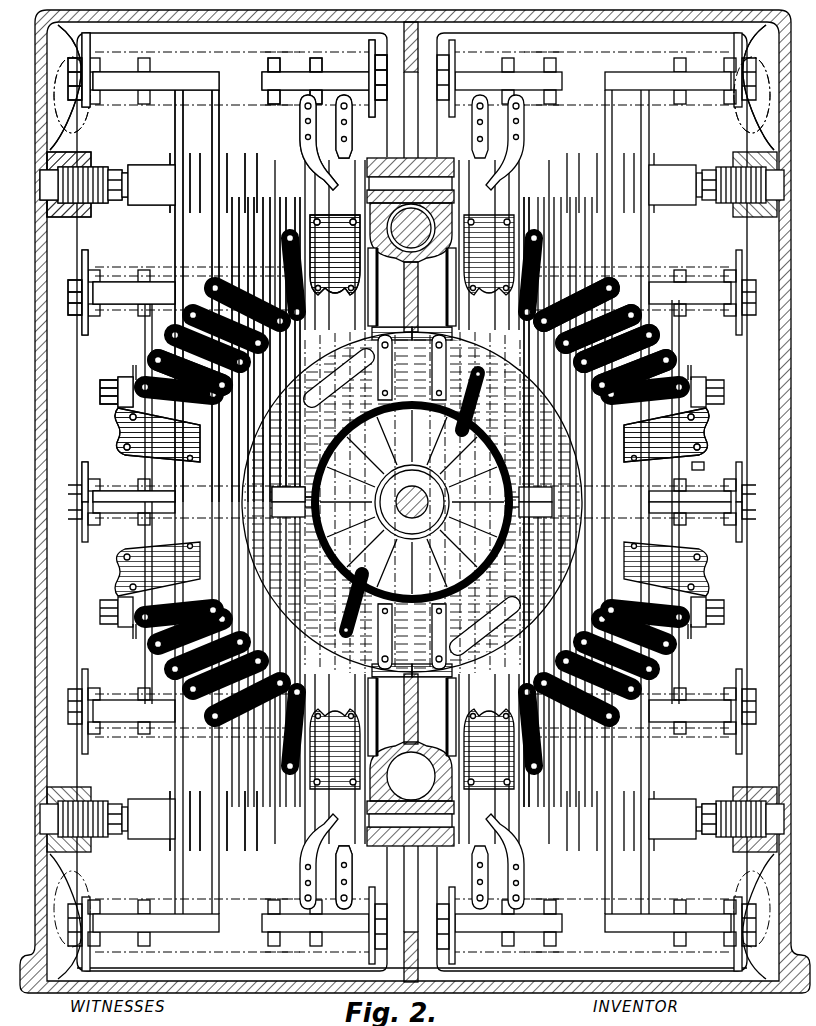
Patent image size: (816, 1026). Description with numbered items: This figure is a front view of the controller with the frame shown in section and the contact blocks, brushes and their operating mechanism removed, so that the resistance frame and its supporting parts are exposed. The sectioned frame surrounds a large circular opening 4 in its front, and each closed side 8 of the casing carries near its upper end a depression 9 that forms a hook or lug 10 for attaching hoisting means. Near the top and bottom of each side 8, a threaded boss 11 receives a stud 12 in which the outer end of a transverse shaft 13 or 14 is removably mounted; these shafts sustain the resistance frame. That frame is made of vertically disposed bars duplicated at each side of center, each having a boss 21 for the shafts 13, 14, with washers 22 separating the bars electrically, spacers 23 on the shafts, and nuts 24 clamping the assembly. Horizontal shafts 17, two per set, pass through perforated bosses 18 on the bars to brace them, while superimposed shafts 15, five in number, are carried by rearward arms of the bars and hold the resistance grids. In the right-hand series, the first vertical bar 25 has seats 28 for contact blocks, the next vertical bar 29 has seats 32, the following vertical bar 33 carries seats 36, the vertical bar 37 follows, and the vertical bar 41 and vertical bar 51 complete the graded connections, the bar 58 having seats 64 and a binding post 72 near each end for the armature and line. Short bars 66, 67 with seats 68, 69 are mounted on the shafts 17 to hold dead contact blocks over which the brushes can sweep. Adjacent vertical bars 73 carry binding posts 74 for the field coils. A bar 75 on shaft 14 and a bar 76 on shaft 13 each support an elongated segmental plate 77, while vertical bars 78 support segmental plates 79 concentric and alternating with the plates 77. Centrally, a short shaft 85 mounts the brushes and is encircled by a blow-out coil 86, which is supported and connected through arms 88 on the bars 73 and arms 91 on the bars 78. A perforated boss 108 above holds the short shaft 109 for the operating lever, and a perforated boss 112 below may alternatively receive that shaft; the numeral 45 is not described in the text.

The circular opening 4 is at (436, 465).
The side of the casing 8 is at (414, 501).
The depression 9 is at (55, 82).
The hook or lug 10 is at (428, 87).
The threaded boss 11 is at (412, 508).
The stud 12 is at (392, 497).
The transverse shaft 13 is at (405, 417).
The transverse shaft 14 is at (718, 831).
The superimposed shaft 15 is at (108, 490).
The horizontal shaft 17 is at (411, 495).
The perforated boss 18 is at (152, 368).
The boss 21 is at (402, 831).
The washer 22 is at (375, 176).
The spacer 23 is at (404, 498).
The nut 24 is at (414, 505).
The first vertical bar 25 is at (178, 132).
The seat 28 is at (635, 349).
The vertical bar 29 is at (173, 228).
The seat 32 is at (622, 329).
The vertical bar 33 is at (416, 434).
The seat 36 is at (609, 309).
The vertical bar 37 is at (173, 240).
The vertical bar 41 is at (278, 252).
The rod 45 is at (414, 511).
The vertical bar 51 is at (409, 499).
The bar 58 is at (410, 495).
The seat 64 is at (398, 500).
The short bar 66 is at (677, 435).
The short bar 67 is at (690, 466).
The seat 68 is at (644, 373).
The seat 69 is at (411, 492).
The binding post 72 is at (409, 496).
The vertical bar 73 is at (400, 877).
The binding post 74 is at (403, 490).
The bar 75 is at (602, 654).
The bar 76 is at (291, 336).
The elongated segmental plate 77 is at (412, 502).
The vertical bar 78 is at (346, 477).
The elongated segmental plate 79 is at (397, 502).
The short shaft 85 is at (412, 502).
The blow-out coil 86 is at (412, 502).
The arm 88 is at (412, 502).
The arm 91 is at (406, 497).
The perforated boss 108 is at (405, 191).
The short shaft 109 is at (418, 232).
The perforated boss 112 is at (410, 794).